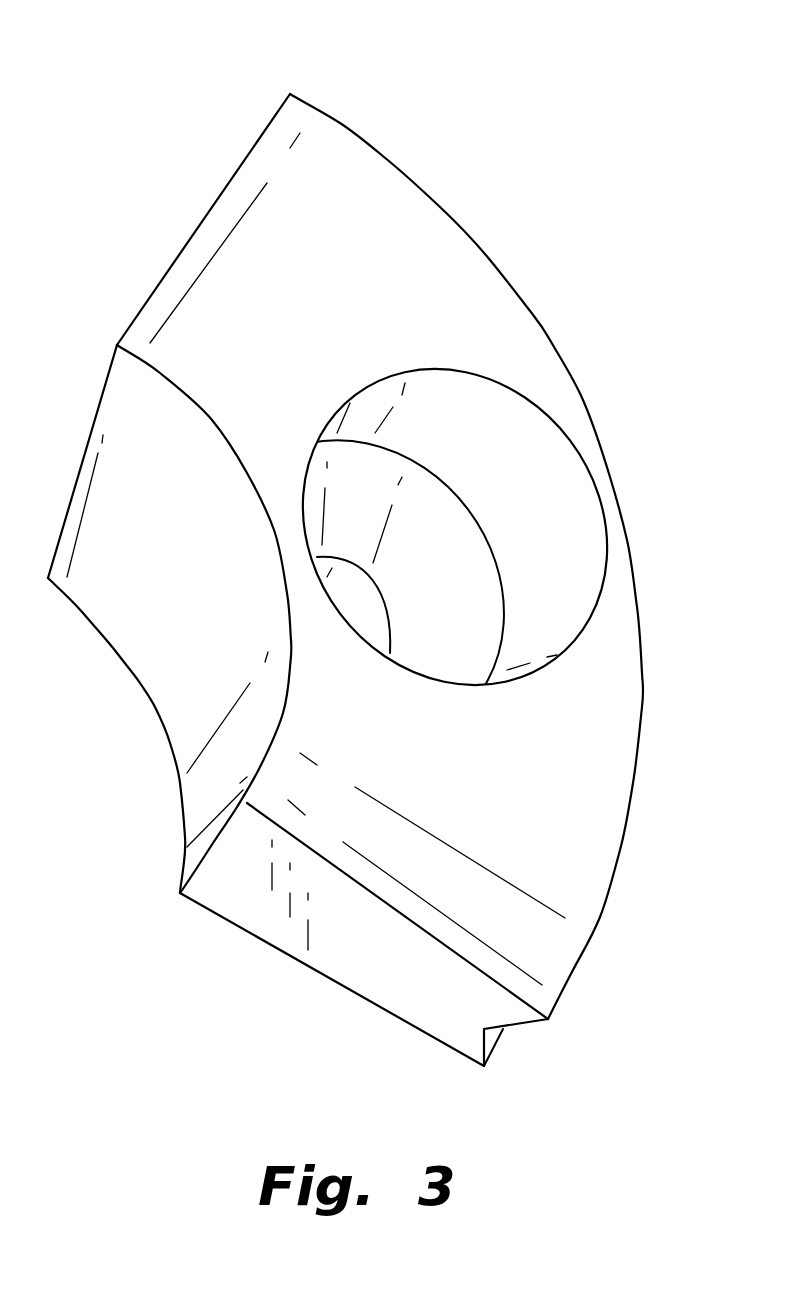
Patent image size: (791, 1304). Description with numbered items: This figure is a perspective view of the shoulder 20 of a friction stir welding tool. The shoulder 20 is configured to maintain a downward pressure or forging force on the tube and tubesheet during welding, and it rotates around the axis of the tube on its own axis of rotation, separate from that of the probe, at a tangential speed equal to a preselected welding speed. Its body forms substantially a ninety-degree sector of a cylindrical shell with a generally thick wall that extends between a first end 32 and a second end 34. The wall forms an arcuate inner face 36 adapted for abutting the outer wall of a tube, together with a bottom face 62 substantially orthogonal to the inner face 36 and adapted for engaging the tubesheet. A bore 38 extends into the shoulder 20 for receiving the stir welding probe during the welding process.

The shoulder 20 is at (555, 147).
The first end 32 is at (187, 243).
The second end 34 is at (220, 888).
The arcuate inner face 36 is at (115, 433).
The bore 38 is at (530, 462).
The bottom face 62 is at (154, 707).